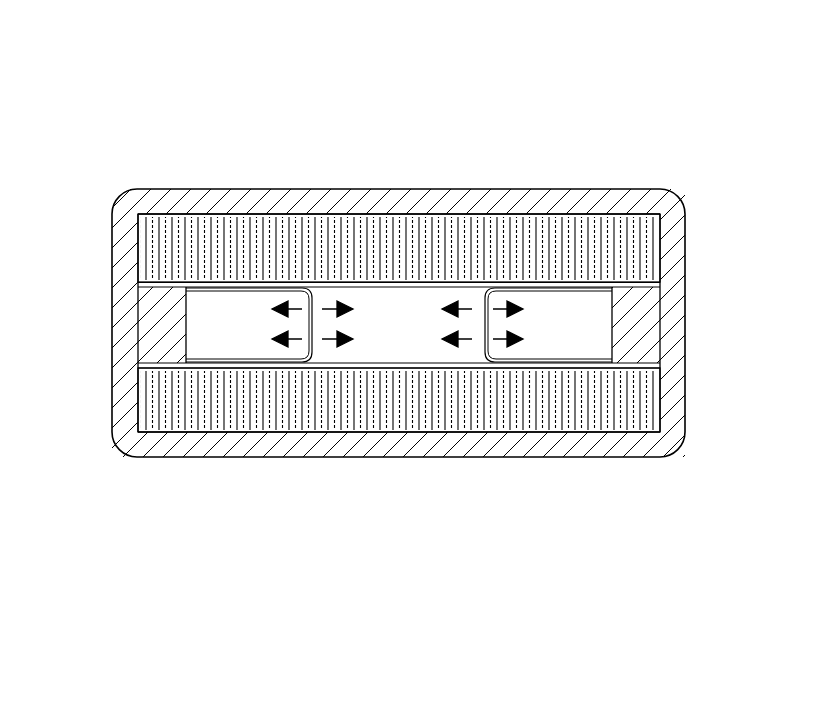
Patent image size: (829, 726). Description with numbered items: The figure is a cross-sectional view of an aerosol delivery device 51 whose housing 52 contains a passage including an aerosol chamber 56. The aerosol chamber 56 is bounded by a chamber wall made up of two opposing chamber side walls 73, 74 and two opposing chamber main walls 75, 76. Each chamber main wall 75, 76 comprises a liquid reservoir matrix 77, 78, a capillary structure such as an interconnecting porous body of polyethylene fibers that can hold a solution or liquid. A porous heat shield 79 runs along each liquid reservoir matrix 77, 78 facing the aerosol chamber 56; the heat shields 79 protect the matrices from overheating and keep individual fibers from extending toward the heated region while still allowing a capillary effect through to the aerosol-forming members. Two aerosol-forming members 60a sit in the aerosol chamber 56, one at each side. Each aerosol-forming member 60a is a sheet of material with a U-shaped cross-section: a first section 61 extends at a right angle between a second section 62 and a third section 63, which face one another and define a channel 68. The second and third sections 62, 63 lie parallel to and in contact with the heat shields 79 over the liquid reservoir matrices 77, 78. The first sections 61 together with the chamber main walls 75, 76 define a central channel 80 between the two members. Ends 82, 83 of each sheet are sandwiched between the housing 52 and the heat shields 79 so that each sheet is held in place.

The aerosol delivery device 51 is at (553, 88).
The housing 52 is at (397, 337).
The aerosol chamber 56 is at (395, 325).
The aerosol-forming member 60a is at (530, 287).
The first section 61 is at (485, 320).
The second section 62 is at (230, 365).
The third section 63 is at (243, 282).
The channel 68 is at (238, 330).
The chamber side wall 73 is at (140, 318).
The chamber side wall 74 is at (665, 313).
The chamber main wall 75 is at (208, 402).
The chamber main wall 76 is at (287, 247).
The liquid reservoir matrix 77 is at (648, 422).
The liquid reservoir matrix 78 is at (470, 235).
The heat shield 79 is at (308, 280).
The central channel 80 is at (422, 343).
The end of sheet of material 82 is at (140, 290).
The end of sheet of material 83 is at (140, 361).